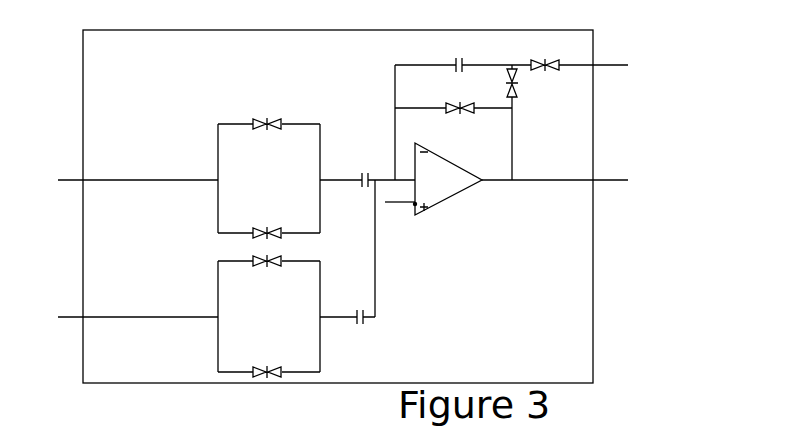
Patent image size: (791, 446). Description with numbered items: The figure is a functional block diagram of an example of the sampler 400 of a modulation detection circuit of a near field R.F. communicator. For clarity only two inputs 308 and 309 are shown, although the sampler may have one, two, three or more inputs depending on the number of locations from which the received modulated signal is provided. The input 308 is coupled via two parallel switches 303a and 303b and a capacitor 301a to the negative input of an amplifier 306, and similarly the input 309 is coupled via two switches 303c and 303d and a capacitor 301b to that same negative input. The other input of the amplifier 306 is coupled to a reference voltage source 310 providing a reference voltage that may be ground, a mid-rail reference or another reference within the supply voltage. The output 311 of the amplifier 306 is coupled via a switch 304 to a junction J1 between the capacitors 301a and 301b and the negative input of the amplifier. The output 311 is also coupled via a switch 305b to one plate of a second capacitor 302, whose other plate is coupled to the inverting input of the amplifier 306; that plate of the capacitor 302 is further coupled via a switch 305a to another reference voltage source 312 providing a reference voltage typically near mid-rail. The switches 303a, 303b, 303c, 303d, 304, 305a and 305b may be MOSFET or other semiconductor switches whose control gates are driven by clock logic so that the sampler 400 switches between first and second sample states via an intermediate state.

The sampler 400 is at (593, 293).
The input 308 is at (119, 180).
The input 309 is at (119, 317).
The switch 303a is at (262, 127).
The switch 303b is at (258, 233).
The switch 303c is at (272, 266).
The switch 303d is at (262, 369).
The capacitor 301a is at (364, 177).
The capacitor 301b is at (357, 314).
The junction J1 is at (393, 177).
The amplifier 306 is at (448, 179).
The reference voltage source 310 is at (385, 202).
The output 311 is at (578, 186).
The reference voltage source 312 is at (532, 65).
The second capacitor 302 is at (459, 59).
The switch 305a is at (562, 52).
The switch 305b is at (516, 80).
The switch 304 is at (465, 112).